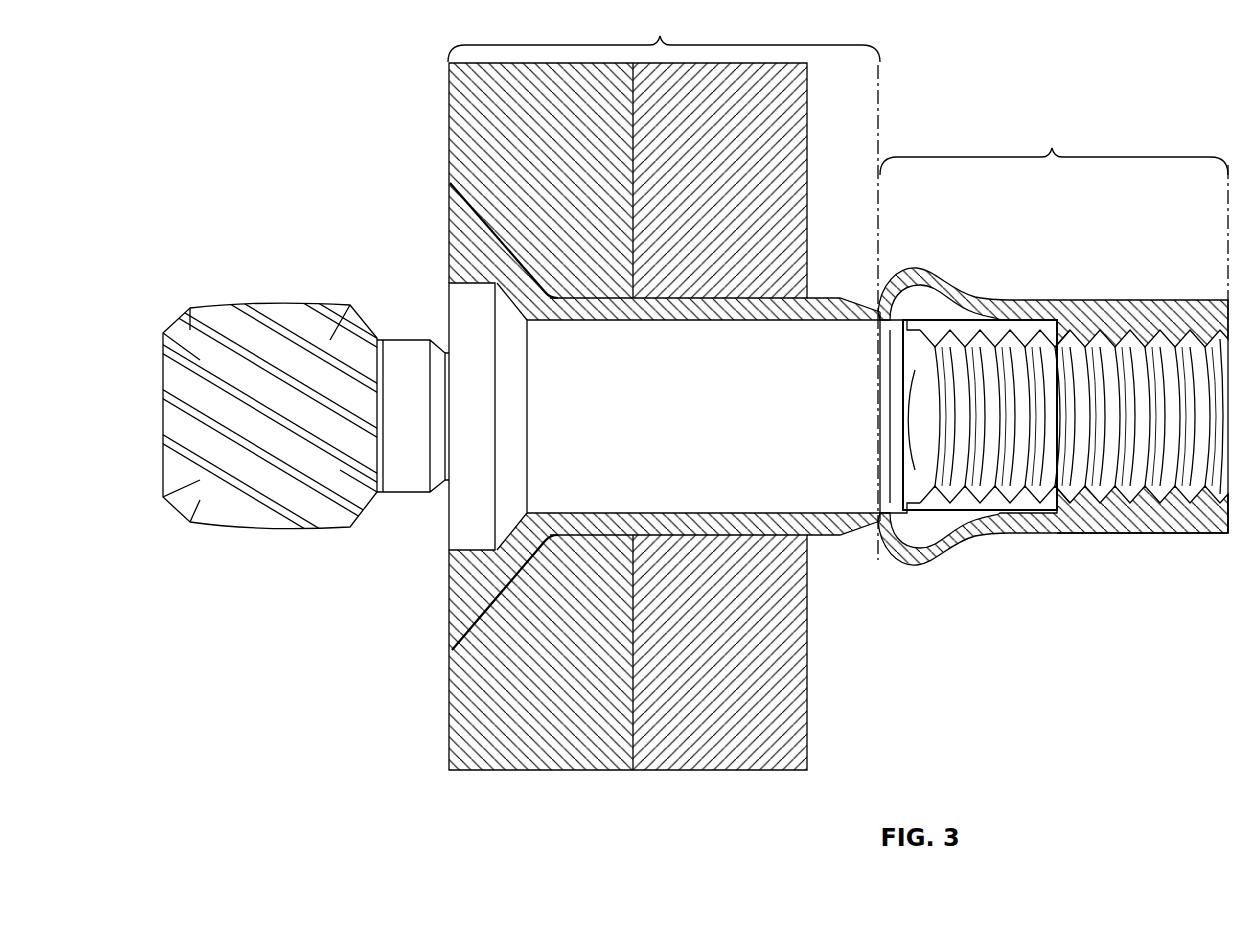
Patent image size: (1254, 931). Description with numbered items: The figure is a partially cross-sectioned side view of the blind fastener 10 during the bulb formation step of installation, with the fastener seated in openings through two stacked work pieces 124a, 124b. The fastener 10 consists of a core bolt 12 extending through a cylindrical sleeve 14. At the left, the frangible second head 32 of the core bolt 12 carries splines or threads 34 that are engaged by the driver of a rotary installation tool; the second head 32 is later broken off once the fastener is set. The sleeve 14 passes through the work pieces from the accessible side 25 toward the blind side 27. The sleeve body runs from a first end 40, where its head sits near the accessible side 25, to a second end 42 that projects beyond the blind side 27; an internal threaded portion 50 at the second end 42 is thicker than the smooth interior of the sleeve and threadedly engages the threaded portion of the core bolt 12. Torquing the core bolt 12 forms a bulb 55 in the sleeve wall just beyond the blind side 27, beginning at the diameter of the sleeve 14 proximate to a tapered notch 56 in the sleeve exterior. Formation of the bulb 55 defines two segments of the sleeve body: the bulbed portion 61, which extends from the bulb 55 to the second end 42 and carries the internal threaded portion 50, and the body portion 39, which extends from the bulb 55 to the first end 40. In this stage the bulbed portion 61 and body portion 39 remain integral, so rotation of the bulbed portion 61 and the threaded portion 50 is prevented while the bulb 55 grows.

The blind fastener 10 is at (889, 241).
The core bolt 12 is at (833, 484).
The cylindrical sleeve 14 is at (824, 294).
The accessible side 25 is at (449, 707).
The blind side 27 is at (808, 665).
The second head 32 is at (273, 528).
The splines or threads 34 is at (280, 370).
The body portion 39 is at (664, 35).
The first end 40 is at (448, 230).
The second end 42 is at (1223, 295).
The internal threaded portion 50 is at (1105, 505).
The bulb 55 is at (930, 265).
The tapered notch 56 is at (872, 539).
The bulbed portion 61 is at (1054, 315).
The work piece 124a is at (540, 703).
The work piece 124b is at (680, 707).